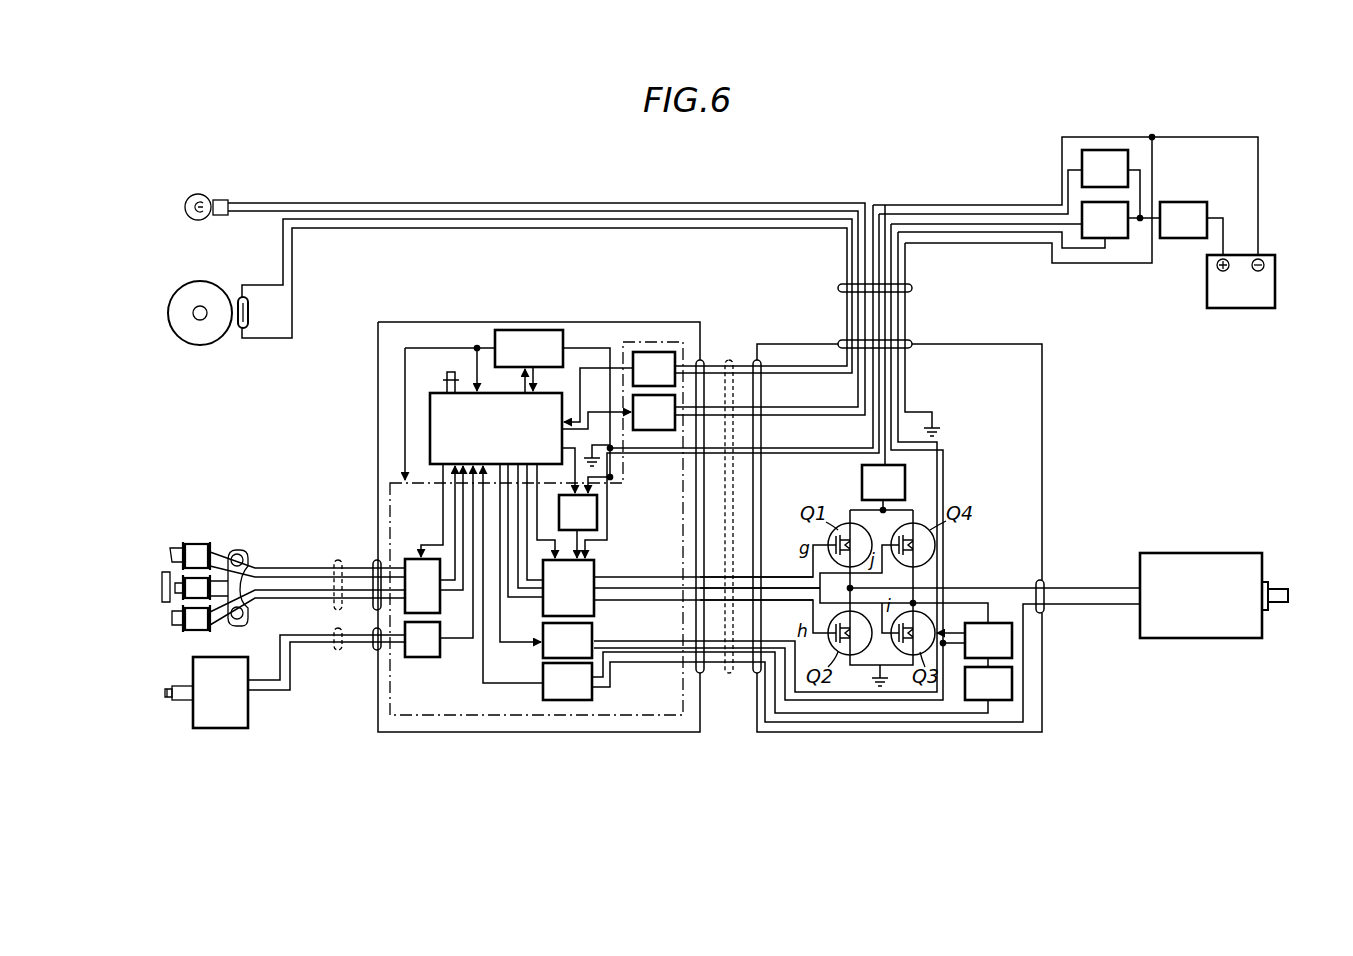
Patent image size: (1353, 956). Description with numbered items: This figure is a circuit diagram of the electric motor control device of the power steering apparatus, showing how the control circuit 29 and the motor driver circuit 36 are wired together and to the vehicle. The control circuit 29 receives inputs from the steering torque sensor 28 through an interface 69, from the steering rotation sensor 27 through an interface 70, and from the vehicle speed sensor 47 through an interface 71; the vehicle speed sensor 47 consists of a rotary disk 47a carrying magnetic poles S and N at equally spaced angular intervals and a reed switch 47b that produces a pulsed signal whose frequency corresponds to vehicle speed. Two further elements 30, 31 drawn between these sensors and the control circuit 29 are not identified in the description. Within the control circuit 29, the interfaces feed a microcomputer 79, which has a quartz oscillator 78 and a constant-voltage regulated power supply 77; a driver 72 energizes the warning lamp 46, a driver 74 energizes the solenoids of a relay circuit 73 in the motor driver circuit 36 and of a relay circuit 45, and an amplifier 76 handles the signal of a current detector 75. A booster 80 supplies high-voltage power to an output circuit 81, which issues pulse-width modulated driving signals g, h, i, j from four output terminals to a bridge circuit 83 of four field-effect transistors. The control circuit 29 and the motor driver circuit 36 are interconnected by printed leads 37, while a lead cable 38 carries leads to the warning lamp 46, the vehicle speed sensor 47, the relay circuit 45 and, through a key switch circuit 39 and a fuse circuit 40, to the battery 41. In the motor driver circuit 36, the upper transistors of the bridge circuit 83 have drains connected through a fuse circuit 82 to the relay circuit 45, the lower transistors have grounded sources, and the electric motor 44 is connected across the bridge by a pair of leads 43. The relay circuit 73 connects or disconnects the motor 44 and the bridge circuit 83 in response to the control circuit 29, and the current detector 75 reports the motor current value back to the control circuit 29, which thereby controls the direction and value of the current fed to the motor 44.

The steering rotation sensor 27 is at (189, 723).
The steering torque sensor 28 is at (172, 539).
The control circuit 29 is at (538, 733).
The connector 30 is at (338, 652).
The connector 31 is at (338, 560).
The electric motor driver circuit 36 is at (900, 733).
The printed leads 37 is at (729, 358).
The lead cable 38 is at (914, 289).
The key switch circuit 39 is at (1103, 150).
The fuse circuit 40 is at (1182, 202).
The battery 41 is at (1228, 308).
The leads 43 is at (1082, 598).
The electric motor 44 is at (1212, 611).
The relay circuit 45 is at (1118, 238).
The warning lamp 46 is at (197, 194).
The vehicle speed sensor 47 is at (236, 348).
The rotary disk 47a is at (189, 282).
The reed switch 47b is at (252, 318).
The interface for the steering torque sensor 69 is at (419, 556).
The interface for the steering rotation sensor 70 is at (421, 659).
The interface for the vehicle speed sensor 71 is at (651, 352).
The driver for the warning lamp 72 is at (650, 430).
The relay circuit 73 is at (990, 623).
The driver for the relay circuit 74 is at (543, 650).
The current detector 75 is at (979, 700).
The amplifier 76 is at (592, 695).
The constant-voltage regulated power supply 77 is at (524, 330).
The quartz oscillator 78 is at (451, 372).
The microcomputer 79 is at (430, 412).
The booster 80 is at (597, 513).
The output circuit 81 is at (594, 606).
The fuse circuit 82 is at (862, 484).
The bridge circuit 83 is at (797, 572).